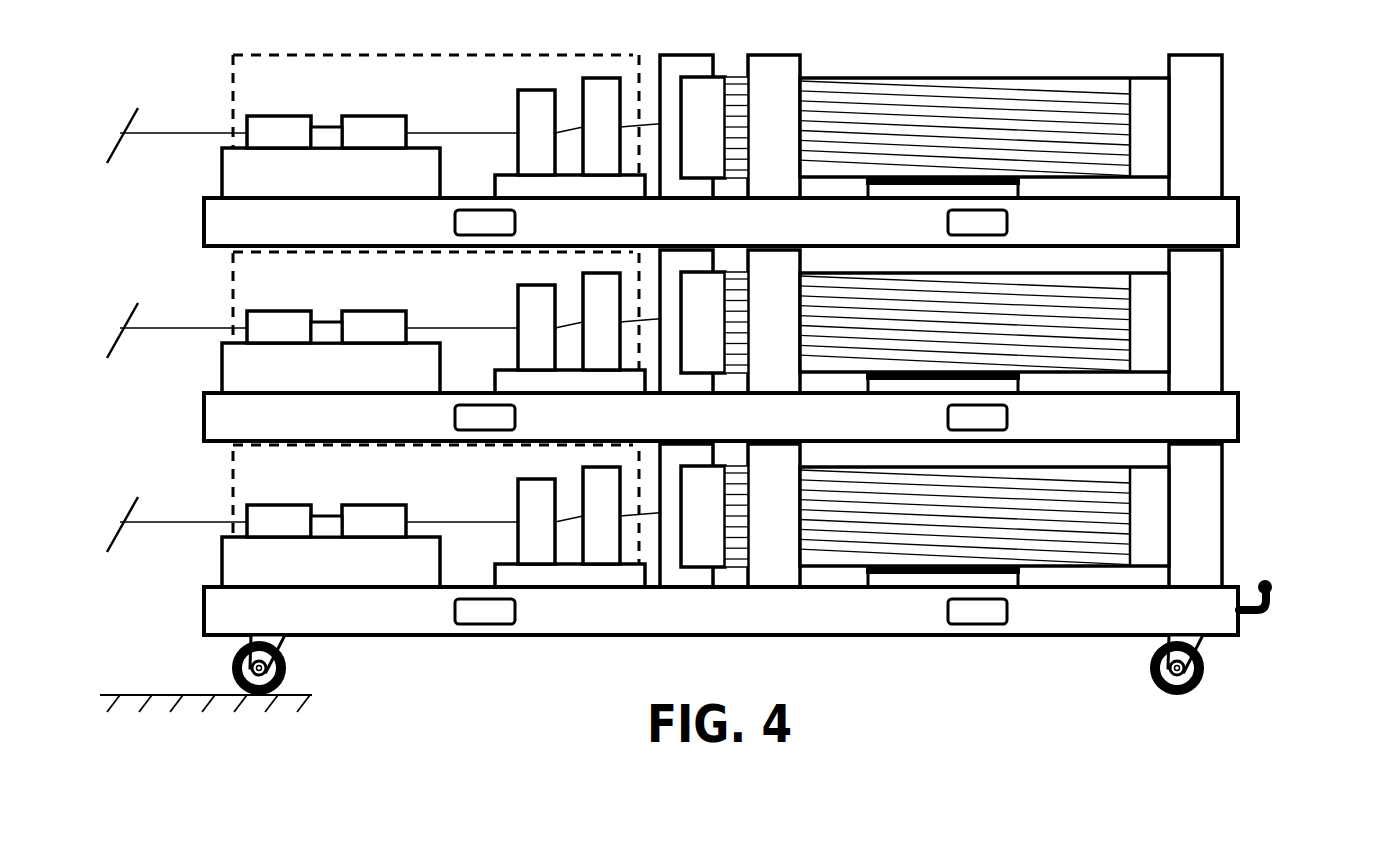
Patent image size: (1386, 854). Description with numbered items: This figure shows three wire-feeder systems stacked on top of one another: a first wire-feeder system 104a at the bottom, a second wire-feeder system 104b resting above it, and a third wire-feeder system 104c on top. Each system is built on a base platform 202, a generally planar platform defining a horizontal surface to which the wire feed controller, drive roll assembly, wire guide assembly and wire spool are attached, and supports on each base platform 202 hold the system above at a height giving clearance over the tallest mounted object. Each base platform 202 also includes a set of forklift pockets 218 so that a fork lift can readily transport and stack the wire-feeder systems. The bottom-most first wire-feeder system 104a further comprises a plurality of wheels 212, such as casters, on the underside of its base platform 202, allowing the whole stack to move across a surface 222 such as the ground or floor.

The first wire-feeder system 104a is at (1287, 445).
The second wire-feeder system 104b is at (1287, 250).
The third wire-feeder system 104c is at (1287, 55).
The base platform 202 is at (1233, 197).
The forklift pockets 218 is at (516, 221).
The wheels 212 is at (233, 672).
The surface 222 is at (118, 695).